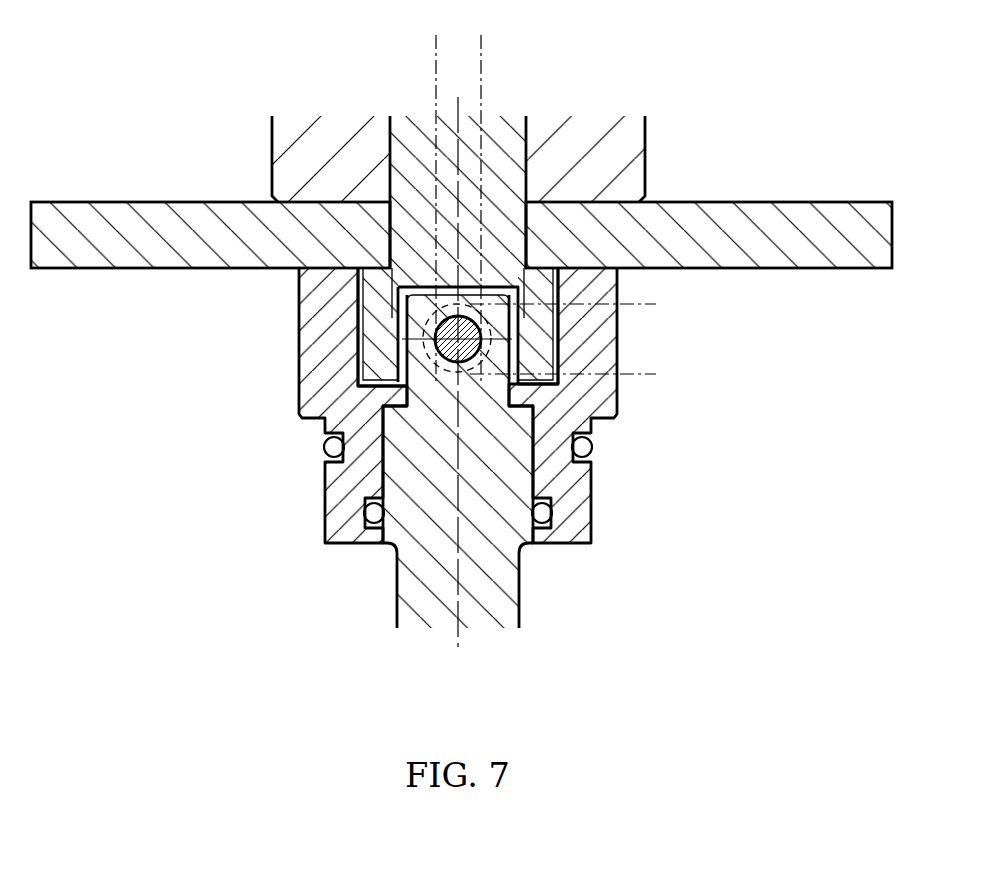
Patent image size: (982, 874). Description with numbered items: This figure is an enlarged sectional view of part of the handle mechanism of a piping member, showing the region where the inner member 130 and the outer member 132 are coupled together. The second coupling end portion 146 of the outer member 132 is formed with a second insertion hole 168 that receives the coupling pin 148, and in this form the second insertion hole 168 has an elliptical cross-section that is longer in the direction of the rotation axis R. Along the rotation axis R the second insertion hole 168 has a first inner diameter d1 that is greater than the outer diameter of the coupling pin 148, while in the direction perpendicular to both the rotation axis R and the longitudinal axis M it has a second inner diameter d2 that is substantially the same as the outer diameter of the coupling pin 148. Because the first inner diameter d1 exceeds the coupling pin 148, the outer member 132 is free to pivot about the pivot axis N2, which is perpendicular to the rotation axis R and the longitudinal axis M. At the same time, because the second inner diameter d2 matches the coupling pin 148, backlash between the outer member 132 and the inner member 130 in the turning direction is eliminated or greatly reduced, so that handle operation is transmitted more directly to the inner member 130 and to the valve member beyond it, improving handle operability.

The outer member 132 is at (270, 136).
The inner member 130 is at (390, 530).
The second coupling end portion 146 is at (375, 347).
The coupling pin 148 is at (457, 340).
The second insertion hole 168 is at (437, 367).
The pivot axis N2 is at (403, 338).
The longitudinal axis M is at (457, 340).
The rotation axis R is at (458, 640).
The first inner diameter d1 is at (652, 304).
The second inner diameter d2 is at (481, 50).